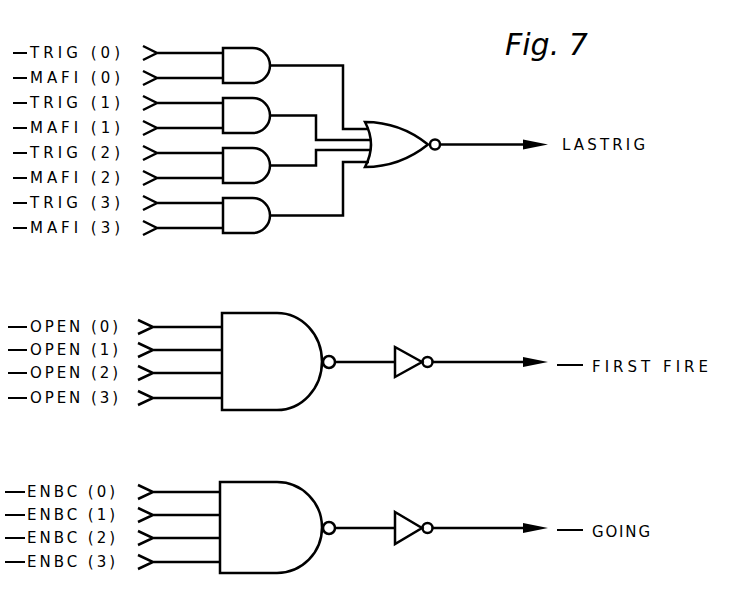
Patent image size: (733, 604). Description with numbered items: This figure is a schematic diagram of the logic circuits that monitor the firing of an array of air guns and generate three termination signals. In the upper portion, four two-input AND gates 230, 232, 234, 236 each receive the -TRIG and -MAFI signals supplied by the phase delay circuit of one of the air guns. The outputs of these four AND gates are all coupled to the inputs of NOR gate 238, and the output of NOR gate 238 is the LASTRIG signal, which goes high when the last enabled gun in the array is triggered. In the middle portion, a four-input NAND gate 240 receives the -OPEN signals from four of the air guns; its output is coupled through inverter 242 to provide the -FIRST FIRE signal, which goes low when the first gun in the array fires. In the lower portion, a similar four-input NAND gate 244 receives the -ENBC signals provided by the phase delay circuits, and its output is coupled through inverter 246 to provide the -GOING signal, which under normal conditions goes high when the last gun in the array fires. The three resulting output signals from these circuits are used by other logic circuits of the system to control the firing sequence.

The AND gate 230 is at (253, 58).
The AND gate 232 is at (253, 108).
The AND gate 234 is at (253, 158).
The AND gate 236 is at (253, 208).
The NOR gate 238 is at (405, 135).
The NAND gate 240 is at (293, 325).
The inverter 242 is at (406, 356).
The NAND gate 244 is at (292, 492).
The inverter 246 is at (406, 522).